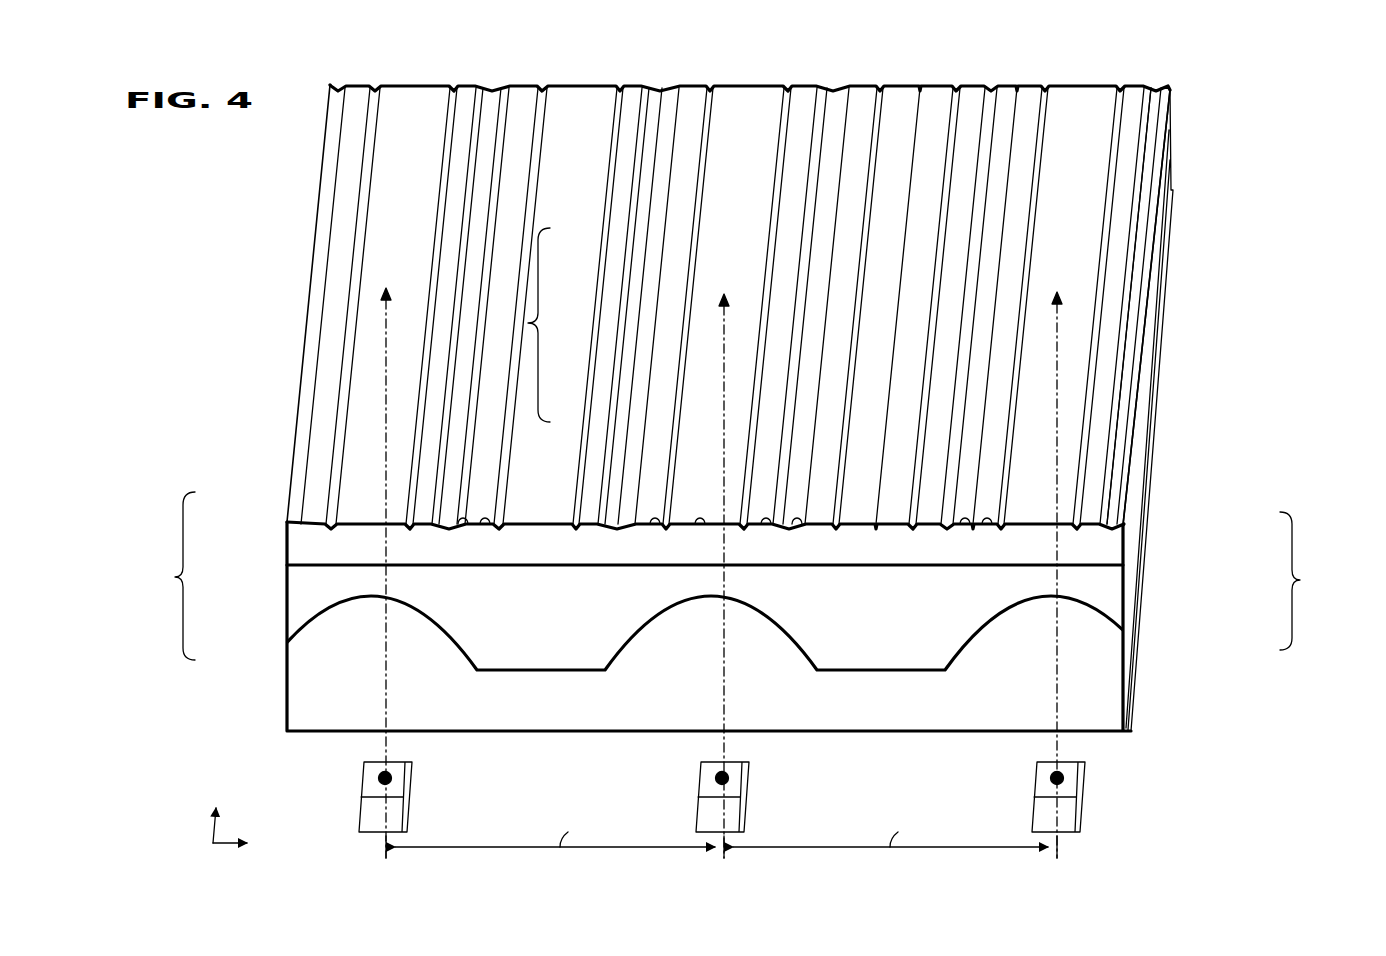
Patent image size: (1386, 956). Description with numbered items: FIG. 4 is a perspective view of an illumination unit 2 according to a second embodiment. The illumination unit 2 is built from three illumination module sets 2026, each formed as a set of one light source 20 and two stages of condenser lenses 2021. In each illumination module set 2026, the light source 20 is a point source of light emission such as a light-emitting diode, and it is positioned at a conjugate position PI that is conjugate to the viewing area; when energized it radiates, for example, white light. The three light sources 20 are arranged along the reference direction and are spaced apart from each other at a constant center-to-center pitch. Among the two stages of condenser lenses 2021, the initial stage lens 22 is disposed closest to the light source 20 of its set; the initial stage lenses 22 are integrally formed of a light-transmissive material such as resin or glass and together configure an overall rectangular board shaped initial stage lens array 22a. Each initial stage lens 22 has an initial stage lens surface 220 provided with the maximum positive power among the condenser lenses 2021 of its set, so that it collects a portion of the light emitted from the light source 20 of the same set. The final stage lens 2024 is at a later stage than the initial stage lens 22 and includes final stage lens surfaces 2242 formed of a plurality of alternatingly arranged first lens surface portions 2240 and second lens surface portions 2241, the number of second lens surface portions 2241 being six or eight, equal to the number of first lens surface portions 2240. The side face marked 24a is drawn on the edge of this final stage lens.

The illumination unit 2 is at (313, 86).
The light source 20 is at (723, 612).
The initial stage lens 22 is at (711, 640).
The initial stage lens array 22a is at (1148, 345).
The side surface 24a is at (1175, 132).
The initial stage lens surface 220 is at (465, 642).
The condenser lenses 2021 is at (703, 350).
The final stage lens 2024 is at (759, 376).
The illumination module set 2026 is at (526, 323).
The first lens surface portions 2240 is at (398, 86).
The second lens surface portions 2241 is at (343, 87).
The final stage lens surfaces 2242 is at (603, 217).
The conjugate position PI is at (391, 776).